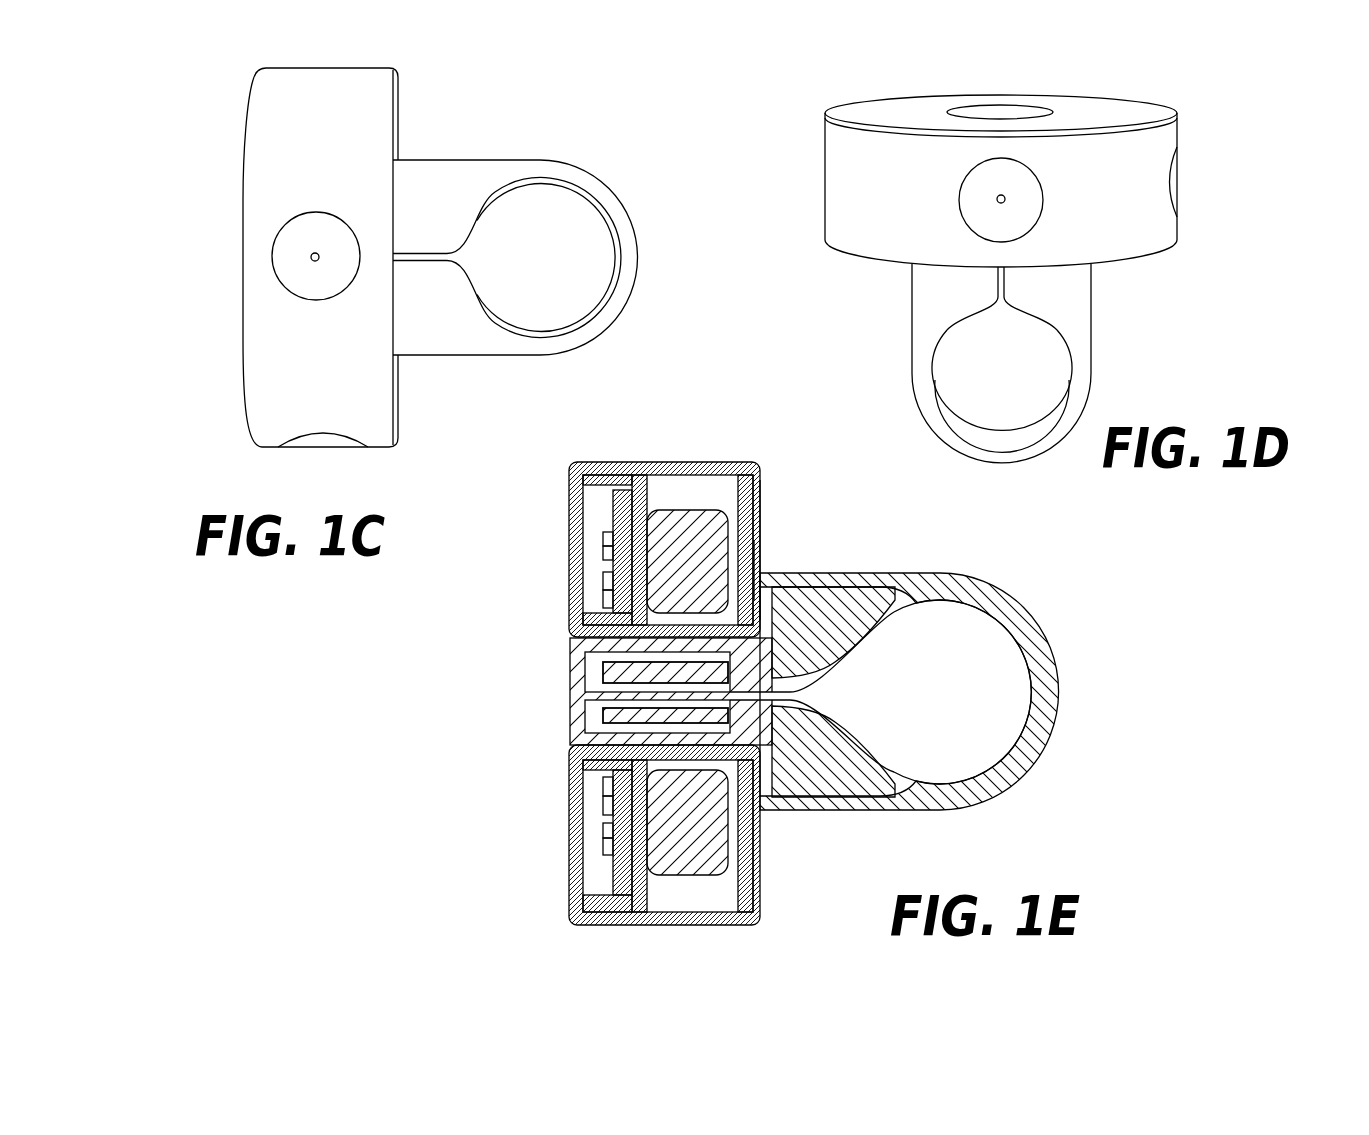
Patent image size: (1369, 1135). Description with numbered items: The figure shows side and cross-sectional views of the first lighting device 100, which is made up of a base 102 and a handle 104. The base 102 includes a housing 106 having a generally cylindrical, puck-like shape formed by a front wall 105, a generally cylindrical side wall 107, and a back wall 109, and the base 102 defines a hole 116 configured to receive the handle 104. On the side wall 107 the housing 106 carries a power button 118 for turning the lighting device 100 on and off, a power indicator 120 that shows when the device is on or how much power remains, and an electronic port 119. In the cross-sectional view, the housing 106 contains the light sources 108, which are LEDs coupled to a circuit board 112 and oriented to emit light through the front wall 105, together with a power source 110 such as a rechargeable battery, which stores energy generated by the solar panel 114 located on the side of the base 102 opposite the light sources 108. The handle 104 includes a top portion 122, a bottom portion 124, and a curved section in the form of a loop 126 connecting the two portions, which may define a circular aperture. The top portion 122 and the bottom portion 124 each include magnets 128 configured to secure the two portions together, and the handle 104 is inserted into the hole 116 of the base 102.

In FIG. 1C, the first lighting device 100 is at (156, 98).
In FIG. 1D, the first lighting device 100 is at (850, 58).
In FIG. 1E, the first lighting device 100 is at (526, 495).
In FIG. 1C, the base 102 is at (264, 60).
In FIG. 1D, the base 102 is at (1250, 90).
In FIG. 1E, the base 102 is at (598, 446).
In FIG. 1C, the handle 104 is at (570, 78).
In FIG. 1D, the handle 104 is at (1154, 345).
In FIG. 1E, the handle 104 is at (1068, 596).
In FIG. 1C, the front wall 105 is at (244, 155).
In FIG. 1D, the front wall 105 is at (1095, 112).
In FIG. 1E, the front wall 105 is at (578, 522).
In FIG. 1C, the housing 106 is at (328, 68).
In FIG. 1D, the housing 106 is at (1178, 222).
In FIG. 1E, the housing 106 is at (730, 462).
In FIG. 1C, the side wall 107 is at (376, 81).
In FIG. 1D, the side wall 107 is at (845, 185).
In FIG. 1E, the side wall 107 is at (580, 915).
In FIG. 1E, the light sources 108 is at (604, 584).
In FIG. 1C, the back wall 109 is at (400, 118).
In FIG. 1D, the back wall 109 is at (1138, 258).
In FIG. 1E, the back wall 109 is at (760, 508).
In FIG. 1E, the power source 110 is at (716, 540).
In FIG. 1E, the circuit board 112 is at (746, 494).
In FIG. 1E, the solar panel 114 is at (760, 562).
In FIG. 1D, the hole 116 is at (1003, 108).
In FIG. 1E, the hole 116 is at (627, 678).
In FIG. 1C, the power button 118 is at (300, 266).
In FIG. 1D, the power button 118 is at (973, 200).
In FIG. 1C, the electronic port 119 is at (302, 449).
In FIG. 1D, the electronic port 119 is at (1180, 182).
In FIG. 1C, the power indicator 120 is at (312, 256).
In FIG. 1D, the power indicator 120 is at (1000, 204).
In FIG. 1C, the top portion 122 is at (463, 172).
In FIG. 1E, the top portion 122 is at (852, 582).
In FIG. 1C, the bottom portion 124 is at (437, 340).
In FIG. 1E, the bottom portion 124 is at (820, 790).
In FIG. 1C, the loop 126 is at (628, 262).
In FIG. 1D, the loop 126 is at (1055, 450).
In FIG. 1E, the loop 126 is at (1040, 690).
In FIG. 1E, the magnets 128 is at (617, 710).